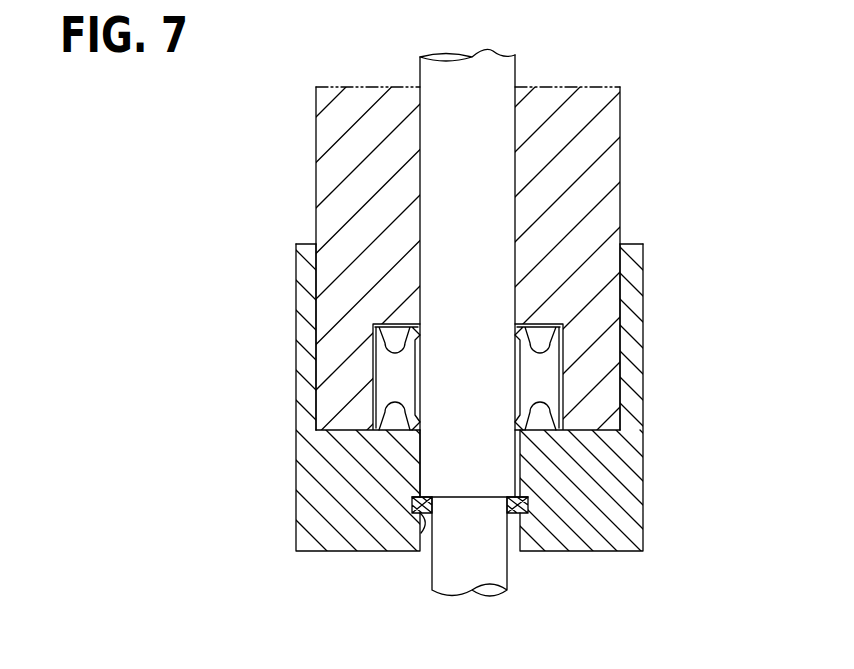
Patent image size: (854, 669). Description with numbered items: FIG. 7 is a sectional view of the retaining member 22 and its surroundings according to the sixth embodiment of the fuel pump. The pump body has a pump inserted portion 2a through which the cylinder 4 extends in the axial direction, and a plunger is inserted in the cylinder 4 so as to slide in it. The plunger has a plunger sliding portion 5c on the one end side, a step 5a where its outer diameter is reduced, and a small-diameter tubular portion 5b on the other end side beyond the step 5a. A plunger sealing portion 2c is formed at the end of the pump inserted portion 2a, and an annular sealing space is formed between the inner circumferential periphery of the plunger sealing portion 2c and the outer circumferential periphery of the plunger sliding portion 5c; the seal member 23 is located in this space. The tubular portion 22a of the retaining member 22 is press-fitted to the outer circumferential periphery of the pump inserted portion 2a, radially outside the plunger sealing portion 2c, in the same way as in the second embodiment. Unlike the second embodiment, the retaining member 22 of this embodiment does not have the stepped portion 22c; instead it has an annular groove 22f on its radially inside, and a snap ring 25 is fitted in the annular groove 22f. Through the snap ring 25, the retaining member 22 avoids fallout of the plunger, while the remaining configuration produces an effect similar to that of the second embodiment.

The cylinder hole 4 is at (562, 252).
The pump inserted portion 2a is at (358, 148).
The plunger sealing portion 2c is at (572, 378).
The plunger sliding portion 5c is at (491, 208).
The step 5a is at (490, 500).
The small-diameter tubular portion 5b is at (495, 560).
The retaining member 22 is at (276, 352).
The tubular portion 22a is at (315, 268).
The stepped portion 22c is at (525, 473).
The annular groove 22f is at (422, 524).
The seal member 23 is at (545, 368).
The snap ring 25 is at (528, 506).